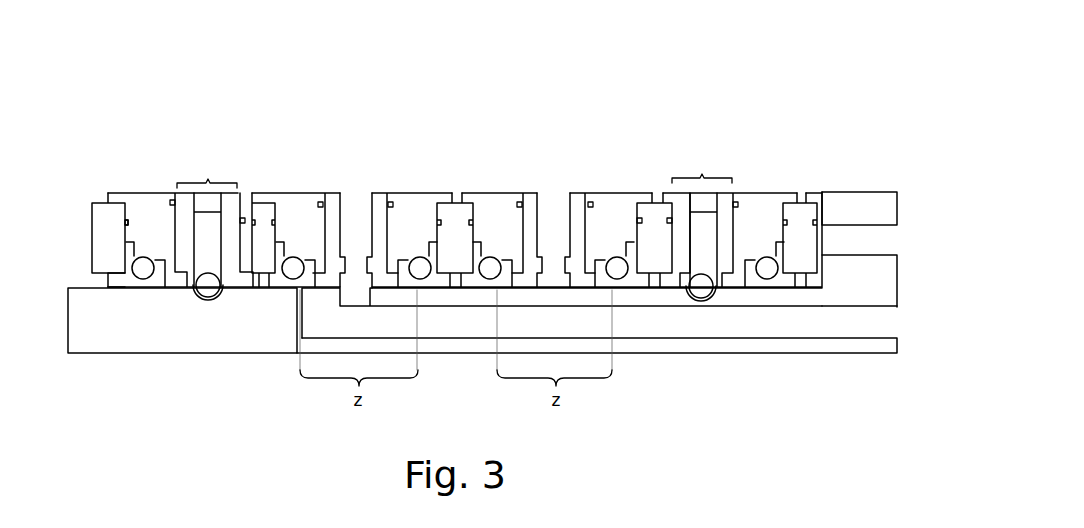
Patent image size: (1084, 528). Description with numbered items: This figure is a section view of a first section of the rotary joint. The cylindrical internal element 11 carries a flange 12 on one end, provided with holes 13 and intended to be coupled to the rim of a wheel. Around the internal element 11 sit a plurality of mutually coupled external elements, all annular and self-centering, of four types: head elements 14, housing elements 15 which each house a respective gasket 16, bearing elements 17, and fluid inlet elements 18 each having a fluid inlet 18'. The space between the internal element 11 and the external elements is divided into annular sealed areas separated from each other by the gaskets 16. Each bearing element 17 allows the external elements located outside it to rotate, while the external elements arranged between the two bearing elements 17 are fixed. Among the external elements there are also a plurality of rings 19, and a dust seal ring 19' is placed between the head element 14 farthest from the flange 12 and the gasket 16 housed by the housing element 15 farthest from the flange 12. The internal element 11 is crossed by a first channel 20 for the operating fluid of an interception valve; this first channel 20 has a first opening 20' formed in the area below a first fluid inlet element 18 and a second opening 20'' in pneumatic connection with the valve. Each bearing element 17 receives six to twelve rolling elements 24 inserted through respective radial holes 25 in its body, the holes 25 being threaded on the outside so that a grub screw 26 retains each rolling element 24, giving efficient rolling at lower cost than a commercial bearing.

The internal element 11 is at (185, 340).
The flange 12 is at (853, 202).
The holes 13 is at (884, 238).
The head element 14 is at (100, 215).
The housing element 15 is at (145, 200).
The gasket 16 is at (135, 281).
The bearing element 17 is at (212, 167).
The fluid inlet element 18 is at (458, 174).
The fluid inlet 18' is at (454, 226).
The ring 19 is at (471, 140).
The dust seal ring 19' is at (85, 343).
The first channel 20 is at (597, 360).
The first opening 20' is at (544, 341).
The second opening 20'' is at (888, 306).
The rolling element 24 is at (210, 292).
The radial hole 25 is at (213, 257).
The grub screw 26 is at (195, 212).